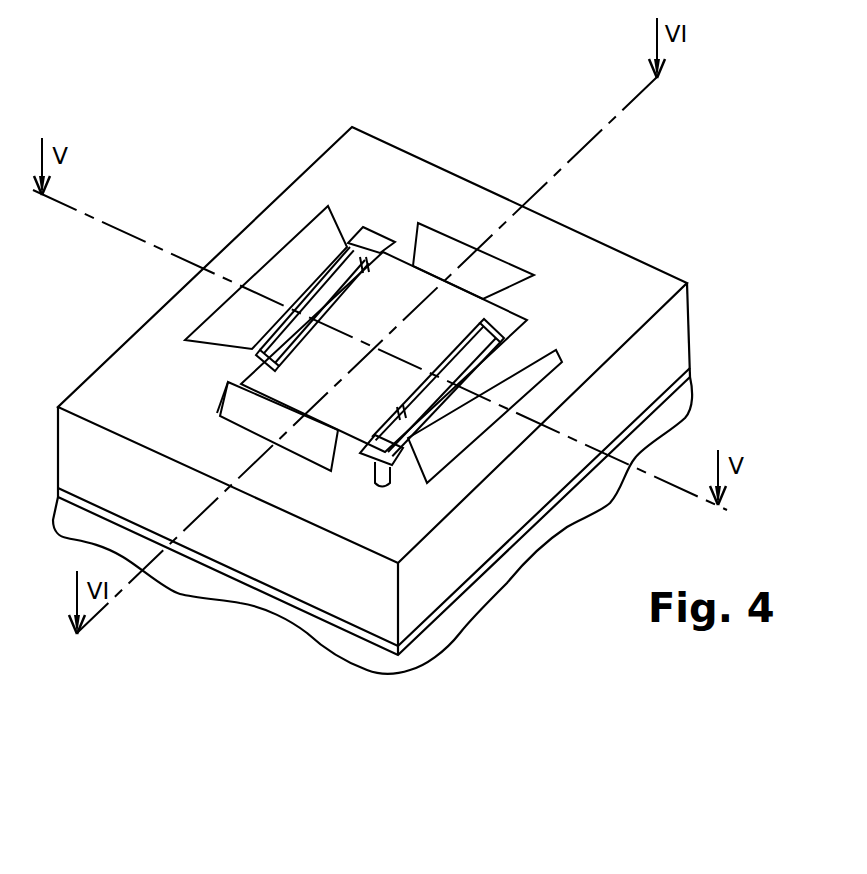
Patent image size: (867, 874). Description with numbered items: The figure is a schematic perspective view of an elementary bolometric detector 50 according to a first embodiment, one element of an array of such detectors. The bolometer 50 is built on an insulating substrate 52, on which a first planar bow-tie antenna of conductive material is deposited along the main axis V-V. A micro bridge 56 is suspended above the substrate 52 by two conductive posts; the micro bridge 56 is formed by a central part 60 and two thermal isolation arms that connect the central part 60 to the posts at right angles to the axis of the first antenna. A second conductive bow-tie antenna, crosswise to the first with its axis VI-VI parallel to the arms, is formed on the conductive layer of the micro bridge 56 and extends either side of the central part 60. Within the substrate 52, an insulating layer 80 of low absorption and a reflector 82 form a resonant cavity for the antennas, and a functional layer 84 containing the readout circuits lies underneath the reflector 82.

The elementary bolometric detector 50 is at (178, 160).
The insulating substrate 52 is at (722, 284).
The micro bridge 56 is at (220, 392).
The central part 60 is at (484, 300).
The insulating layer 80 is at (363, 614).
The reflector 82 is at (408, 643).
The functional layer 84 is at (462, 622).